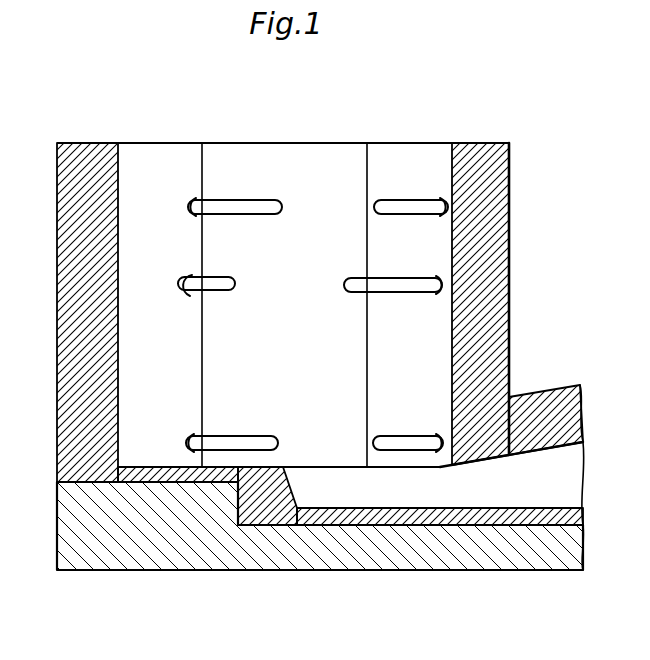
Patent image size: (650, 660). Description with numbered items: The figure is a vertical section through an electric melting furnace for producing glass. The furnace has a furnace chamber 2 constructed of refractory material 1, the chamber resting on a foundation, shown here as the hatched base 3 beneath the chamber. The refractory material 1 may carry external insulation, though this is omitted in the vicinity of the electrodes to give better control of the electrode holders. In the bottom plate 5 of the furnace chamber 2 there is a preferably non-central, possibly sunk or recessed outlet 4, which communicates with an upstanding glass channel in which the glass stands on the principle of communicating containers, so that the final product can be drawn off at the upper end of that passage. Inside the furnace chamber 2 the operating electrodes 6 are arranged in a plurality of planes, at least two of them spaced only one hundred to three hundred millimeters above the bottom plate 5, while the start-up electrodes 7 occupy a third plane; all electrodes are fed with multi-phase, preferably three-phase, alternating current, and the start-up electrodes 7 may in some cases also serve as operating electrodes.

The refractory material 1 is at (63, 210).
The furnace chamber 2 is at (210, 347).
The base 3 is at (127, 572).
The outlet 4 is at (578, 483).
The bottom plate 5 is at (158, 472).
The operating electrodes 6 is at (406, 200).
The start-up electrodes 7 is at (412, 432).